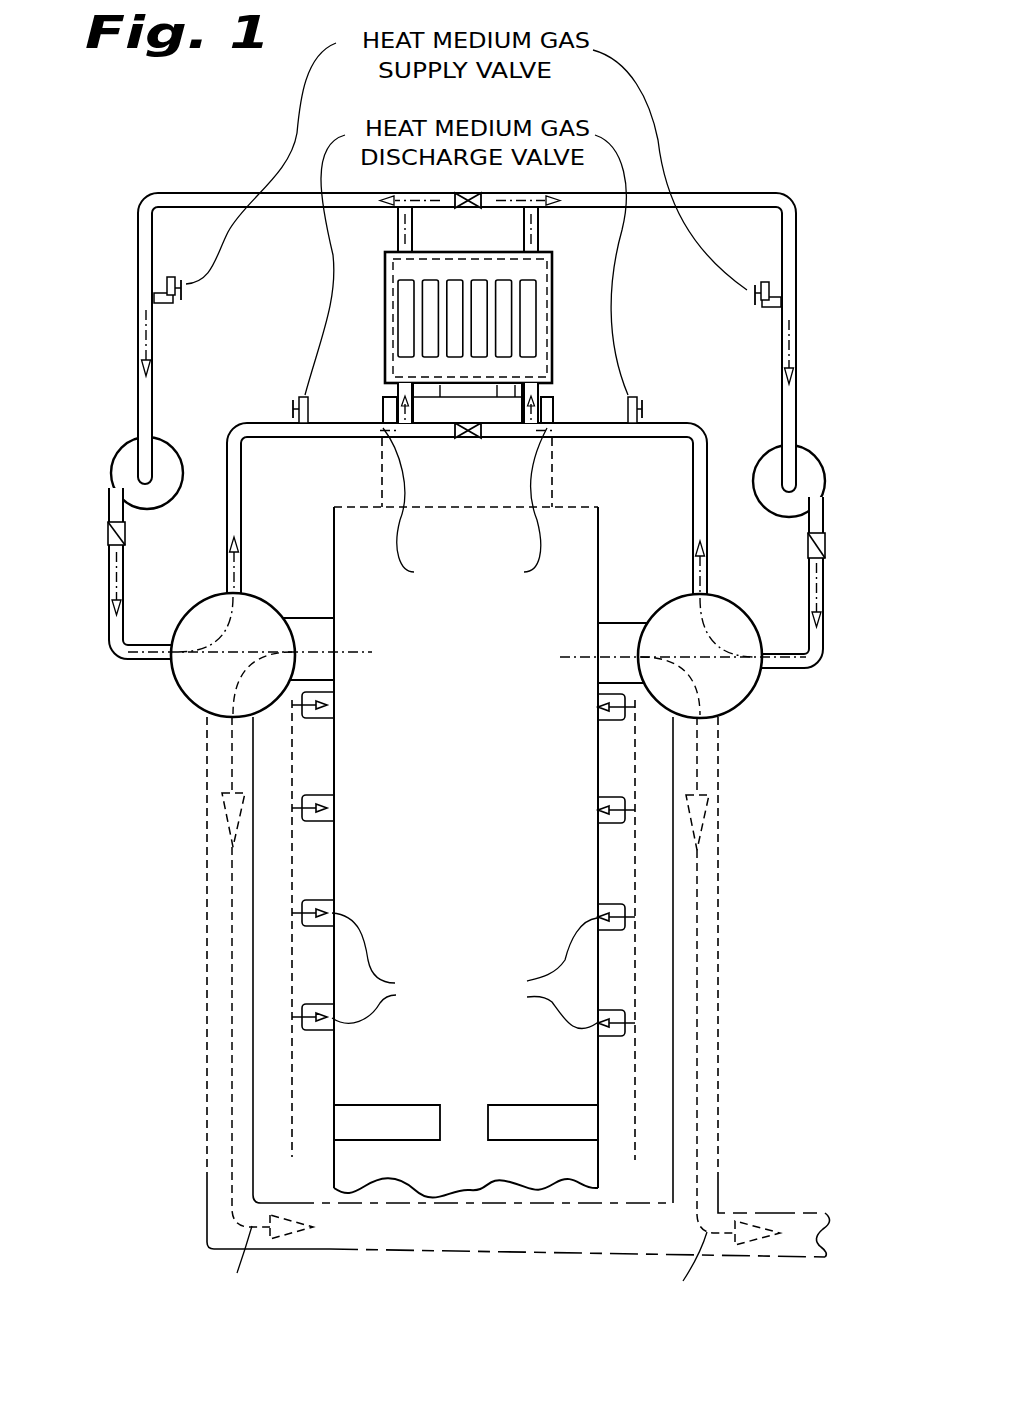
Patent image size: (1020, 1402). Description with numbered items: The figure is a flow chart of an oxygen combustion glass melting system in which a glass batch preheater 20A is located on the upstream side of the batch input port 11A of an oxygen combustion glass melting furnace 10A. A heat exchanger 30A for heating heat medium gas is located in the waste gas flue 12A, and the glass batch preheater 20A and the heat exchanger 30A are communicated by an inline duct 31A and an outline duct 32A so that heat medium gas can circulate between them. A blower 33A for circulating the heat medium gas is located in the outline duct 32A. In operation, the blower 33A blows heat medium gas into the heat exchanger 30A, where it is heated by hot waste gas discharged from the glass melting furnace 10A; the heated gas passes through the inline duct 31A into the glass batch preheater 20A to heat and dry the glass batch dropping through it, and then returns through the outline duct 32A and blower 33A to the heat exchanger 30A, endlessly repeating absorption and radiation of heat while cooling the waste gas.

The oxygen combustion glass melting furnace 10A is at (490, 823).
The batch input port 11A is at (490, 492).
The waste gas flue 12A is at (205, 1002).
The glass batch preheater 20A is at (553, 348).
The heat exchanger 30A is at (187, 698).
The inline duct 31A is at (272, 438).
The outline duct 32A is at (178, 194).
The blower 33A is at (110, 446).